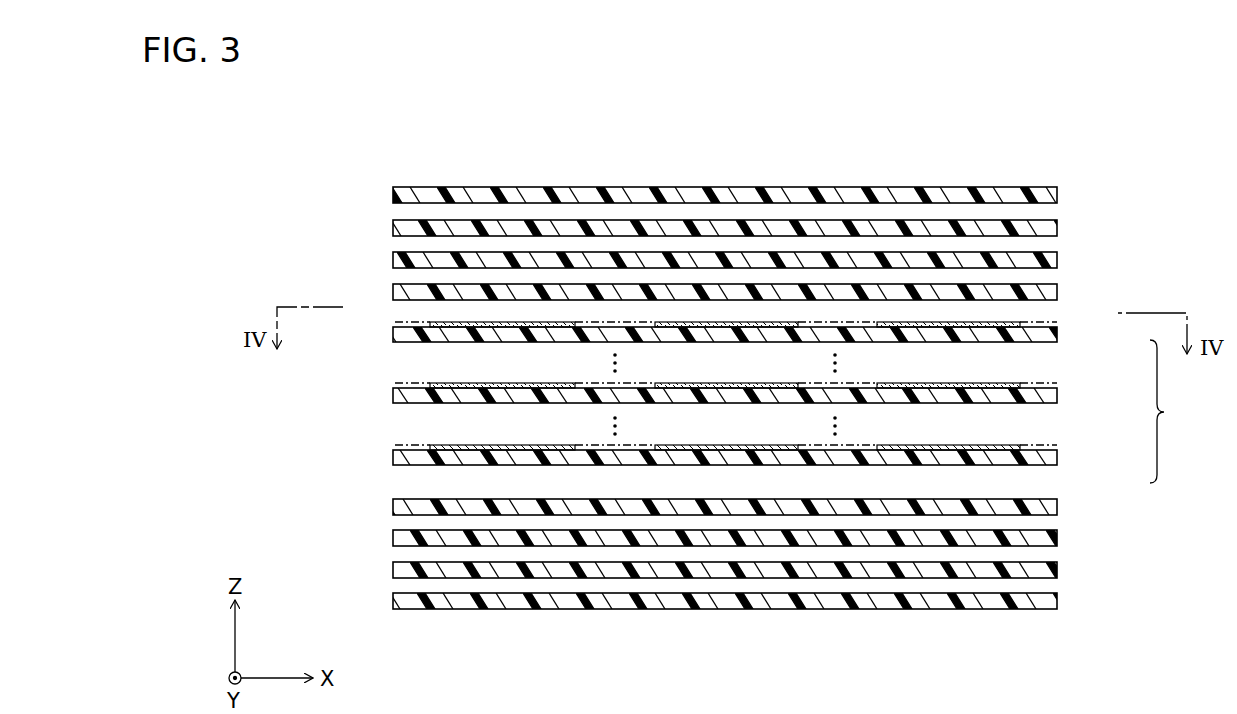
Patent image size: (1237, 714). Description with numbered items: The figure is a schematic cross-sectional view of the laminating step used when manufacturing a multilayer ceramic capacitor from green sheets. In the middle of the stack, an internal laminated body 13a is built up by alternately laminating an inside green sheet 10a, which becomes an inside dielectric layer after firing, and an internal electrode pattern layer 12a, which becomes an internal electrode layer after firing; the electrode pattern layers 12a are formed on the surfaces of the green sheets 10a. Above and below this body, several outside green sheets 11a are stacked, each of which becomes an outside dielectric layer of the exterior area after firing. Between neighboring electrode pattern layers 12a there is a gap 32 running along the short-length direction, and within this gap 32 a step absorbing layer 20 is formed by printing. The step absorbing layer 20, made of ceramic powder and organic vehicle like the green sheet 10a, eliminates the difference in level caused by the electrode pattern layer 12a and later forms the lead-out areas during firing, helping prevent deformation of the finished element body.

The inside green sheet 10a is at (1057, 335).
The outside green sheet 11a is at (393, 190).
The internal electrode pattern layer 12a is at (440, 324).
The internal laminated body 13a is at (1181, 411).
The step absorbing layer 20 is at (634, 320).
The gap 32 is at (594, 322).